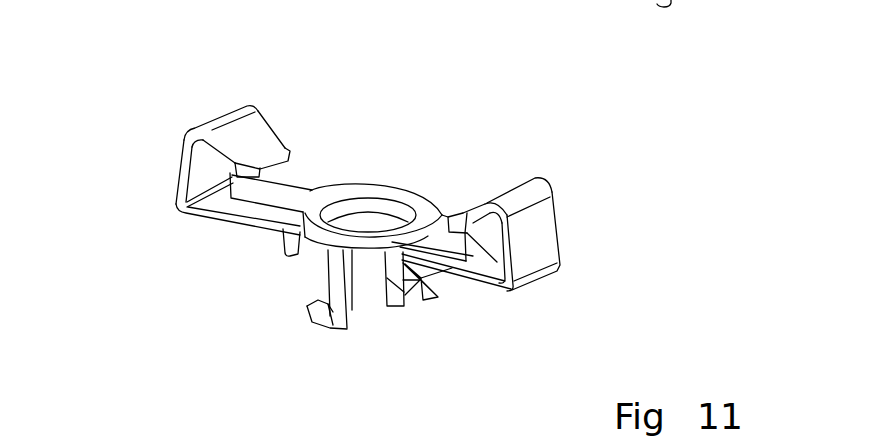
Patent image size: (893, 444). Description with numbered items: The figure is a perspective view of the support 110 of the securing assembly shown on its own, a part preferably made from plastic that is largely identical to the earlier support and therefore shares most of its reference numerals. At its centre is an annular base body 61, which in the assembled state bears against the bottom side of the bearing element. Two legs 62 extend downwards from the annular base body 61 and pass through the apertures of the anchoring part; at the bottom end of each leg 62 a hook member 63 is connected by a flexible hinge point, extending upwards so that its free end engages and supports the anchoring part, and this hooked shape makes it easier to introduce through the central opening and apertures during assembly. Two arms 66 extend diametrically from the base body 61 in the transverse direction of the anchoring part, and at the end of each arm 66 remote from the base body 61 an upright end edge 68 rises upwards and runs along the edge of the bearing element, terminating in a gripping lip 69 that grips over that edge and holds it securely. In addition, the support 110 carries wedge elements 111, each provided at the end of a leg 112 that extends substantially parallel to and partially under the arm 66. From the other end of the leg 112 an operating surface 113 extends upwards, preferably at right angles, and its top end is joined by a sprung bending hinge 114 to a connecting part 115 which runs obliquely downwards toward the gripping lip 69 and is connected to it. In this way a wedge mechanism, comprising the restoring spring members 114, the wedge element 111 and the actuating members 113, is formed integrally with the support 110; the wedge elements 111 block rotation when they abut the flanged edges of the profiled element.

The support 110 is at (430, 76).
The annular base body 61 is at (392, 187).
The leg 62 is at (353, 300).
The hook member 63 is at (317, 323).
The arm 66 is at (305, 193).
The upright end edge 68 is at (437, 295).
The gripping lip 69 is at (276, 143).
The wedge element 111 is at (285, 242).
The leg 112 is at (218, 216).
The operating surface 113 is at (182, 177).
The sprung bending hinge 114 is at (212, 127).
The connecting part 115 is at (250, 128).